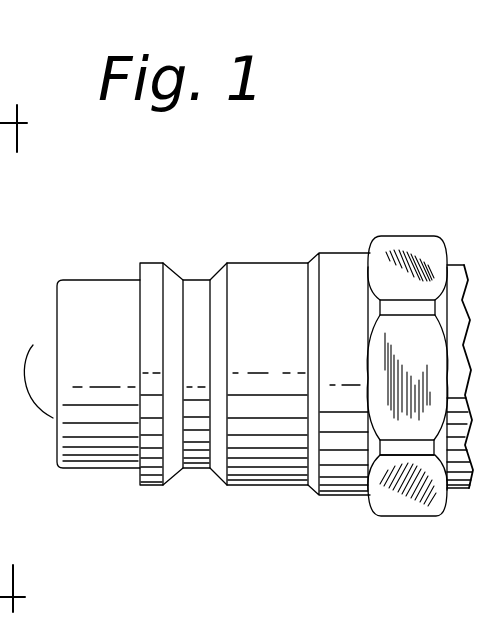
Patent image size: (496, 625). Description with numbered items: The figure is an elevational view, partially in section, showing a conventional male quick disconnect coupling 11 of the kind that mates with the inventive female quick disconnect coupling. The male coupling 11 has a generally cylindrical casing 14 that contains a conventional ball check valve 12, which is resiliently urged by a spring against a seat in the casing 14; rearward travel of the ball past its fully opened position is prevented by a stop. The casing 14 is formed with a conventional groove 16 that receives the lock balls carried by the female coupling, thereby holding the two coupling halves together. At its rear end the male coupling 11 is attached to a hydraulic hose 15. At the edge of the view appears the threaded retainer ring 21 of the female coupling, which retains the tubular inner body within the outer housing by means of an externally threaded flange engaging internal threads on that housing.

The male quick disconnect coupling 11 is at (252, 264).
The ball check valve 12 is at (33, 345).
The casing 14 is at (106, 248).
The hydraulic hose 15 is at (457, 263).
The groove 16 is at (192, 470).
The threaded retainer ring 21 is at (10, 198).